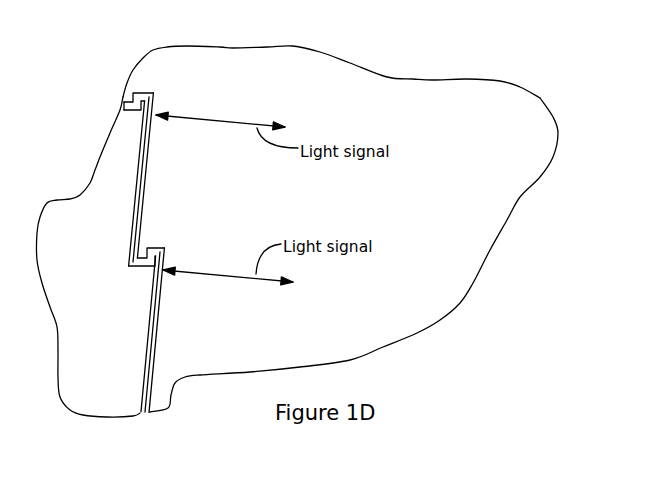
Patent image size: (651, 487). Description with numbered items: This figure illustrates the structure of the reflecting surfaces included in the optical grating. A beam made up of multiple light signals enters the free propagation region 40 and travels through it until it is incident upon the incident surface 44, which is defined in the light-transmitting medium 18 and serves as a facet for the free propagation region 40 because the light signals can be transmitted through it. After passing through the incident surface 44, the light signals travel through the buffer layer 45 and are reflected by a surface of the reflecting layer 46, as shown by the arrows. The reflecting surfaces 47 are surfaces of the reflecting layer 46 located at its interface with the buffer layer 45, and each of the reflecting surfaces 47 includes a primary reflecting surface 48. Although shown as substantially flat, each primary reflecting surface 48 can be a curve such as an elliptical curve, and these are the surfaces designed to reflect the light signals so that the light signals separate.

The light-transmitting medium 18 is at (477, 225).
The free propagation region 40 is at (282, 76).
The incident surface 44 is at (150, 367).
The buffer layer 45 is at (139, 94).
The reflecting layer 46 is at (122, 112).
The reflecting surfaces 47 is at (183, 237).
The primary reflecting surface 48 is at (143, 191).